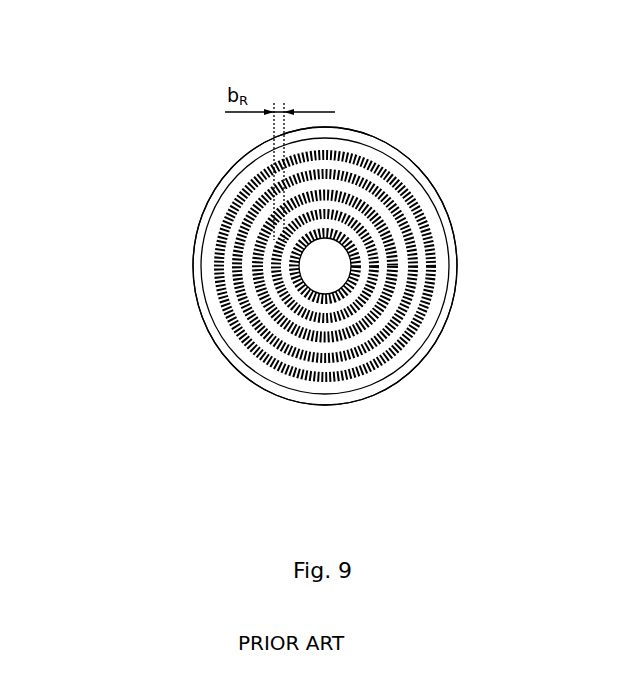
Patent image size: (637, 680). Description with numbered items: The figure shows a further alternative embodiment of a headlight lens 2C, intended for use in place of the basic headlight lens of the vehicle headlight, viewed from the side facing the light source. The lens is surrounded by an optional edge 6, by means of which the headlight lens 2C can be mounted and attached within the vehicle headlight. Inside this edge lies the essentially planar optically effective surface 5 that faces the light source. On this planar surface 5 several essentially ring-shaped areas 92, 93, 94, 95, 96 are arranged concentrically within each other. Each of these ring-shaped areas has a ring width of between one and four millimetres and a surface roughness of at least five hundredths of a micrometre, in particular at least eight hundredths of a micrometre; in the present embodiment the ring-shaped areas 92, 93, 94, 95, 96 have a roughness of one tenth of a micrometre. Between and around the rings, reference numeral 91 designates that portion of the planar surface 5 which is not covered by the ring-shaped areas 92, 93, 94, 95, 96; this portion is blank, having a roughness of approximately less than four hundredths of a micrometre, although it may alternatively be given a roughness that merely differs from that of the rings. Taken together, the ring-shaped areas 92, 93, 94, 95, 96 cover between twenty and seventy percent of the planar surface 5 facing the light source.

The headlight lens 2C is at (492, 77).
The edge 6 is at (447, 227).
The essentially planar optically effective surface 5 is at (221, 247).
The portion of the essentially planar surface 91 is at (365, 287).
The essentially ring-shaped area 92 is at (214, 278).
The essentially ring-shaped area 93 is at (260, 328).
The essentially ring-shaped area 94 is at (331, 275).
The essentially ring-shaped area 95 is at (372, 260).
The essentially ring-shaped area 96 is at (338, 240).